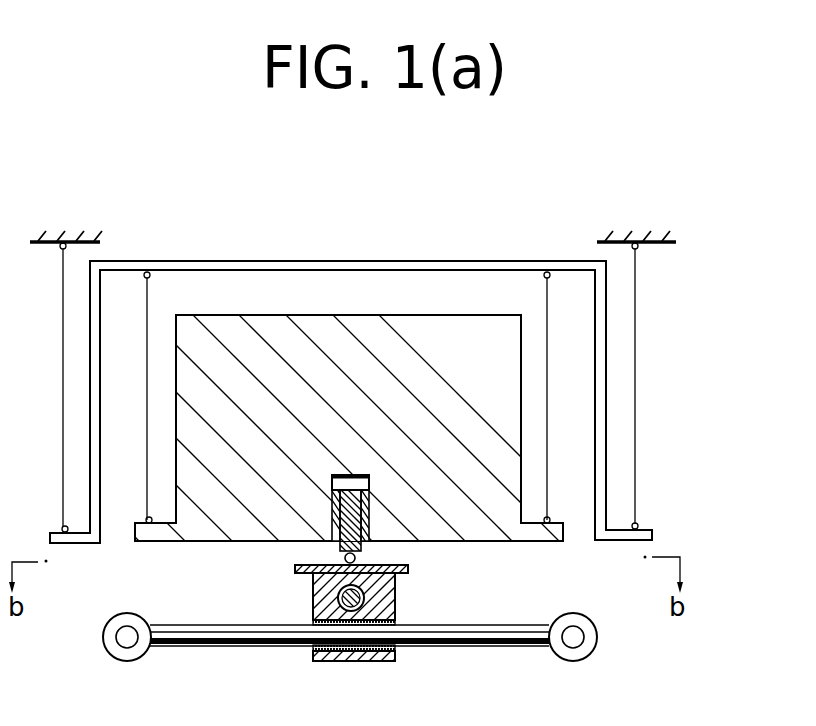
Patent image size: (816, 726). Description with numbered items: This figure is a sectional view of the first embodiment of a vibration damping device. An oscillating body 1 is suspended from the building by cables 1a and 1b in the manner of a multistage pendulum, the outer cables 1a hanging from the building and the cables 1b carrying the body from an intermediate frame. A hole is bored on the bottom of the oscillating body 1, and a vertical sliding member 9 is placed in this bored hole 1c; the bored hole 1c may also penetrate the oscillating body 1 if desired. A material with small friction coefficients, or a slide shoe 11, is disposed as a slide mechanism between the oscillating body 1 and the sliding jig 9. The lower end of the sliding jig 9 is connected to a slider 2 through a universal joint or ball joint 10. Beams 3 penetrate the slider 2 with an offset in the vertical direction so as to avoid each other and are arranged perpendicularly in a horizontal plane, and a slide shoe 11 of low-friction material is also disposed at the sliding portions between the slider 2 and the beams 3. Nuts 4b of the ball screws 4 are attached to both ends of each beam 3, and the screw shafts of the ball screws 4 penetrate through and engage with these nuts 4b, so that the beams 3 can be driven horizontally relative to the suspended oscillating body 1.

The oscillating body 1 is at (510, 418).
The cable 1a is at (633, 339).
The cable 1b is at (545, 296).
The bored hole 1c is at (370, 481).
The slider 2 is at (393, 607).
The beam 3 is at (337, 599).
The ball screw 4 is at (133, 647).
The nut 4b is at (112, 650).
The vertical sliding member 9 is at (335, 528).
The ball joint 10 is at (396, 574).
The slide shoe 11 is at (366, 514).